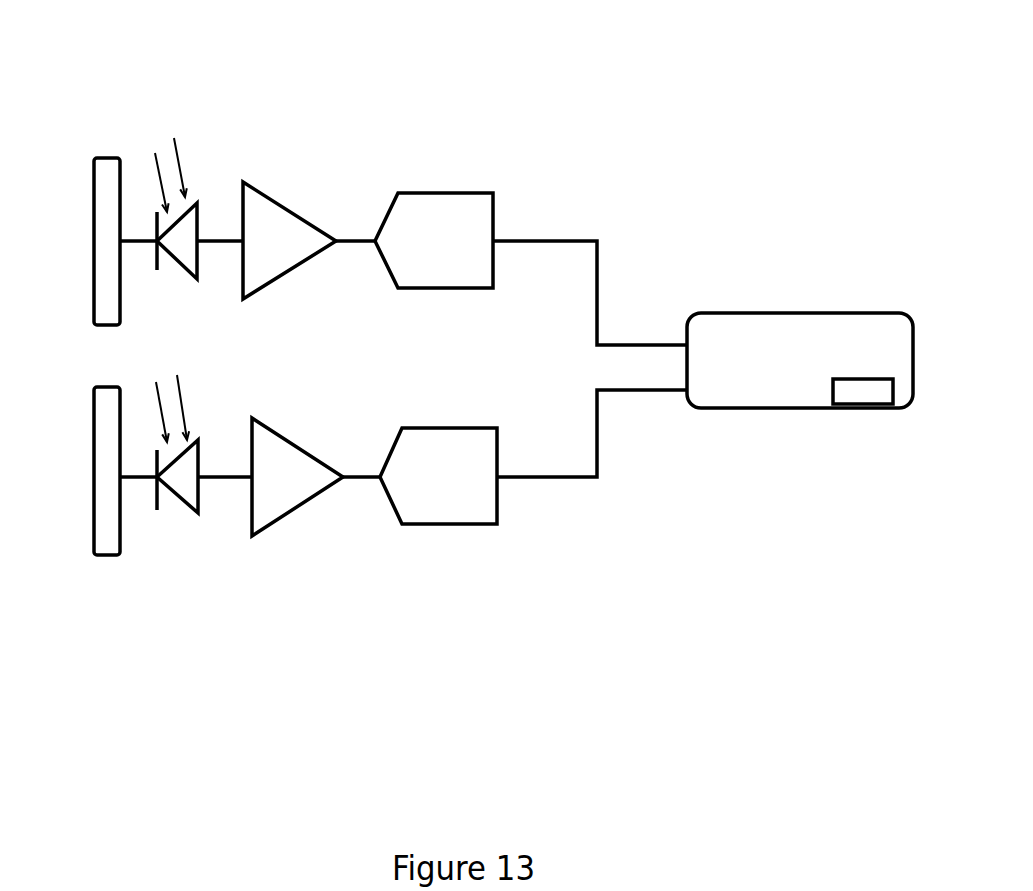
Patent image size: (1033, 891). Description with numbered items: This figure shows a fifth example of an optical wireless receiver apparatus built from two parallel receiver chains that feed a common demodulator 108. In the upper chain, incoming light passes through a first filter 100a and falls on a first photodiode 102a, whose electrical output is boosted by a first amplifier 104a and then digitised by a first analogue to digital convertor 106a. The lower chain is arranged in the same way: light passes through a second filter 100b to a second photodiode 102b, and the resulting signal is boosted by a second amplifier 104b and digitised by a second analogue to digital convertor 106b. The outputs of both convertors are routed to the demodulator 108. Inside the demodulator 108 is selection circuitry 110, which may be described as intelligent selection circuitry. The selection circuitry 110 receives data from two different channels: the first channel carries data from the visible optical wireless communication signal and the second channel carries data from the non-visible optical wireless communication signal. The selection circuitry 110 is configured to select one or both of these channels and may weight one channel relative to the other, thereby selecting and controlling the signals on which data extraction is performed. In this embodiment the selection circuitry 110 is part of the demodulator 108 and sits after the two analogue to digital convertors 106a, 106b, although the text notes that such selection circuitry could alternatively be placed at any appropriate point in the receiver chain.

The first filter 100a is at (97, 138).
The first photodiode 102a is at (193, 132).
The first amplifier 104a is at (325, 133).
The first analogue to digital convertor 106a is at (432, 132).
The second filter 100b is at (105, 580).
The second photodiode 102b is at (218, 580).
The second amplifier 104b is at (322, 580).
The second analogue to digital convertor 106b is at (450, 575).
The demodulator 108 is at (819, 440).
The selection circuitry 110 is at (867, 404).